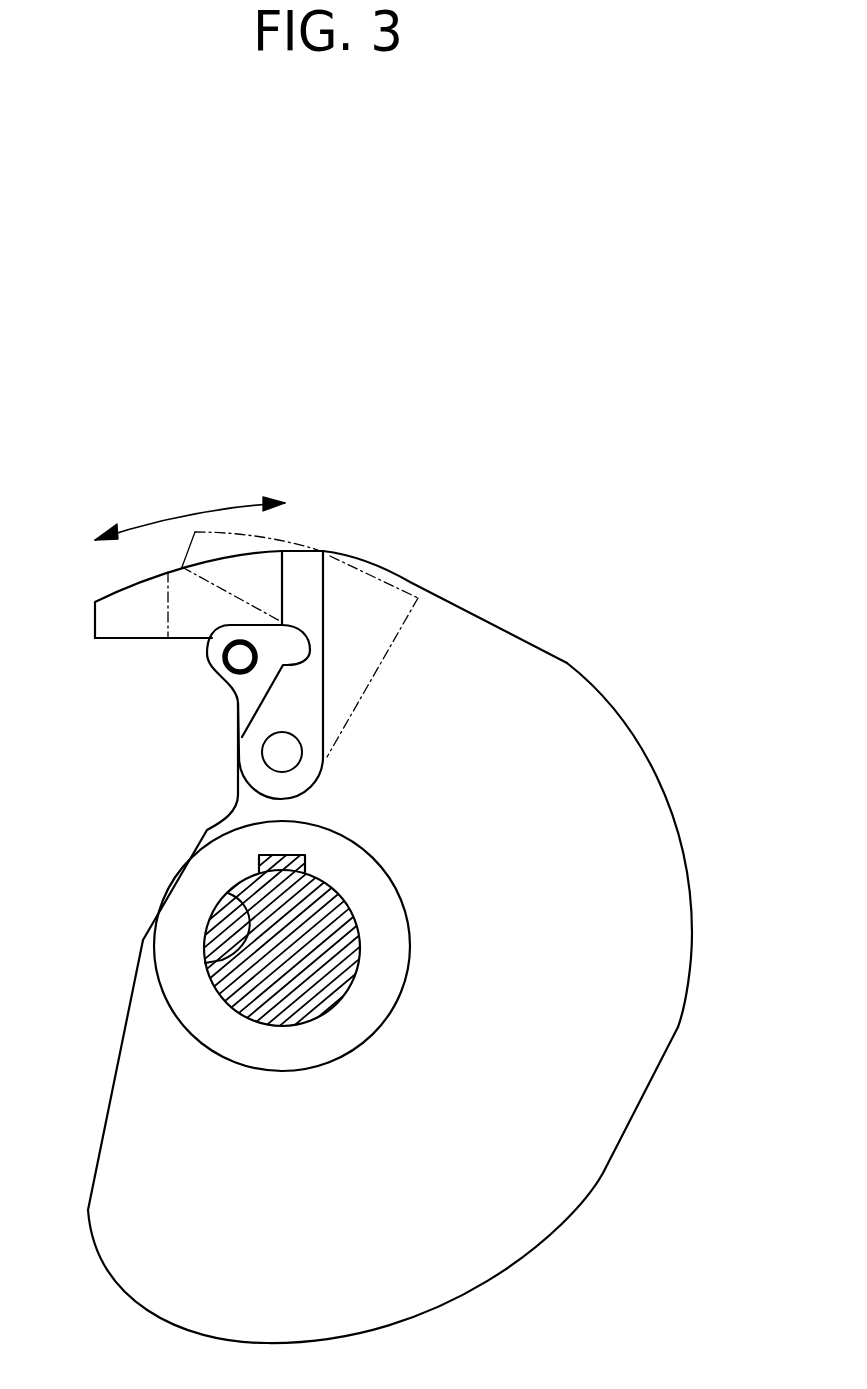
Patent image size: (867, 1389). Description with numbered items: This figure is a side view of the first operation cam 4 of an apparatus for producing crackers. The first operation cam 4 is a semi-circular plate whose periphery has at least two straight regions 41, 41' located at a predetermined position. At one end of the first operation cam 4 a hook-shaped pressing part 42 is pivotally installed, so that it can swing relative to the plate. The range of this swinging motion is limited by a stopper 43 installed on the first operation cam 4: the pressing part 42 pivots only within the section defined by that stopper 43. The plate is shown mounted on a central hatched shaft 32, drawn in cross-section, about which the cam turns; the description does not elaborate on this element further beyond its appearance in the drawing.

The first operation cam 4 is at (565, 675).
The straight region 41 is at (424, 1023).
The straight region 41' is at (332, 593).
The hook-shaped pressing part 42 is at (306, 568).
The stopper 43 is at (232, 659).
The rotary shaft 32 is at (205, 963).